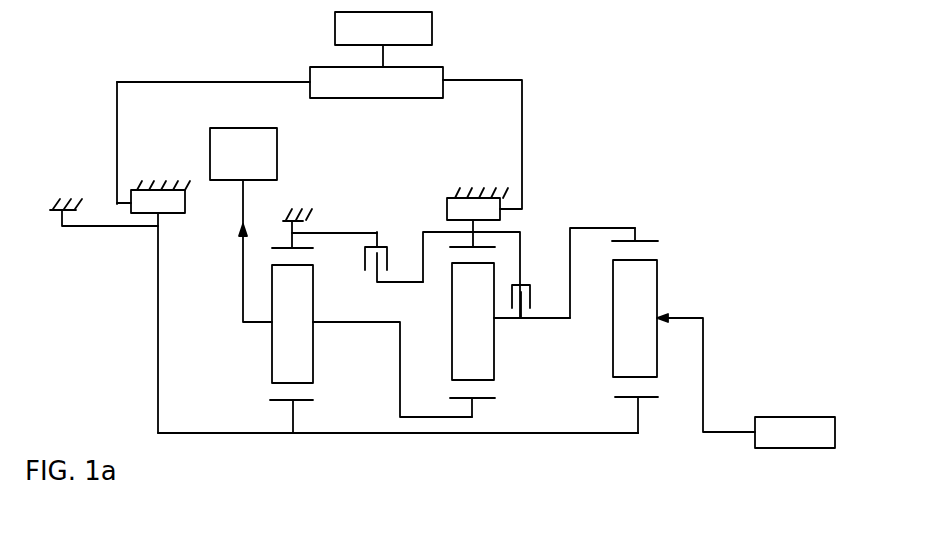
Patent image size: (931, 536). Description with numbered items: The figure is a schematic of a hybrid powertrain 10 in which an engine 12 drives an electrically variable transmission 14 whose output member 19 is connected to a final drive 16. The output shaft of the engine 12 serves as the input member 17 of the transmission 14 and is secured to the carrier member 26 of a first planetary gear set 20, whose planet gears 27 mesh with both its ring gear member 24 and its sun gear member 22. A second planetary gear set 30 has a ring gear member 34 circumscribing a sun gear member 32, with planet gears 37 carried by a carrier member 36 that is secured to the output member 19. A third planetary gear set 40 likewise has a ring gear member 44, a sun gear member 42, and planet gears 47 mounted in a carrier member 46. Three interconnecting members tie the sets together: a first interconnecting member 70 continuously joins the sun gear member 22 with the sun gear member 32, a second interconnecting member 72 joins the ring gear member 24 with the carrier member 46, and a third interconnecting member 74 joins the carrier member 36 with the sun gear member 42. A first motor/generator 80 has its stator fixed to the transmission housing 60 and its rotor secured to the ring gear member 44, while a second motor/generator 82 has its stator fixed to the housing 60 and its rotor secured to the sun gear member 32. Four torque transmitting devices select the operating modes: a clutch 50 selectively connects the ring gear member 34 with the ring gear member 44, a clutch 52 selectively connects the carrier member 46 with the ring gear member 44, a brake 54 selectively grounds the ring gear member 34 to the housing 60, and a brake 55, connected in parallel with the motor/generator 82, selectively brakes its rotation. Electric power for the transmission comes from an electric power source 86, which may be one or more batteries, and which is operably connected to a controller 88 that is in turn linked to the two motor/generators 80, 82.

The powertrain 10 is at (82, 45).
The engine 12 is at (777, 416).
The electrically variable transmission 14 is at (80, 96).
The final drive 16 is at (234, 128).
The input member 17 is at (727, 433).
The output member 19 is at (243, 204).
The first planetary gear set 20 is at (631, 408).
The sun gear member 22 is at (645, 401).
The ring gear member 24 is at (655, 241).
The carrier member 26 is at (663, 308).
The planet gears 27 is at (635, 318).
The second planetary gear set 30 is at (288, 408).
The sun gear member 32 is at (300, 401).
The ring gear member 34 is at (278, 247).
The carrier member 36 is at (262, 331).
The planet gears 37 is at (292, 324).
The third planetary gear set 40 is at (468, 408).
The sun gear member 42 is at (483, 401).
The ring gear member 44 is at (452, 249).
The carrier member 46 is at (500, 333).
The planet gears 47 is at (471, 306).
The clutch 50 is at (369, 284).
The clutch 52 is at (531, 306).
The brake 54 is at (313, 212).
The brake 55 is at (42, 217).
The transmission housing 60 is at (142, 190).
The first interconnecting member 70 is at (545, 432).
The second interconnecting member 72 is at (600, 228).
The third interconnecting member 74 is at (333, 322).
The first motor/generator 80 is at (440, 200).
The second motor/generator 82 is at (188, 217).
The electric power source 86 is at (432, 26).
The controller 88 is at (443, 78).